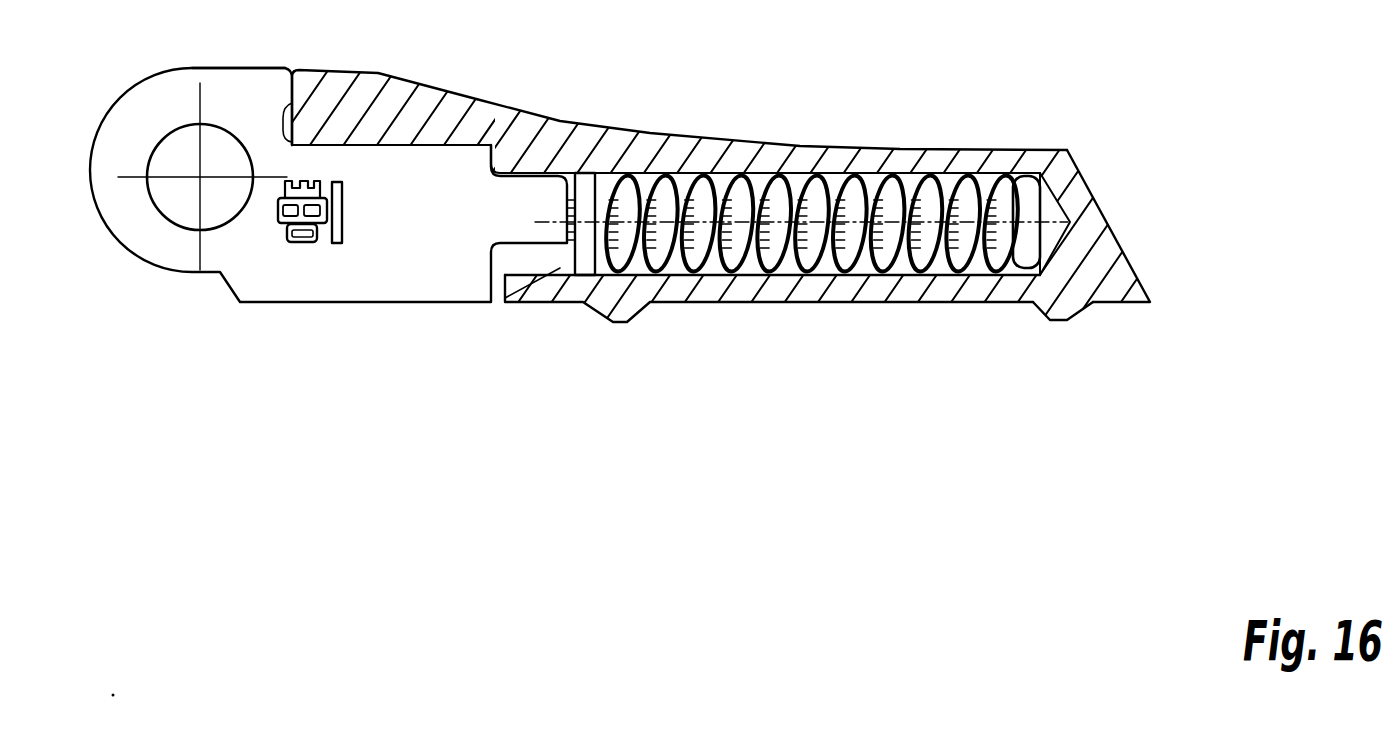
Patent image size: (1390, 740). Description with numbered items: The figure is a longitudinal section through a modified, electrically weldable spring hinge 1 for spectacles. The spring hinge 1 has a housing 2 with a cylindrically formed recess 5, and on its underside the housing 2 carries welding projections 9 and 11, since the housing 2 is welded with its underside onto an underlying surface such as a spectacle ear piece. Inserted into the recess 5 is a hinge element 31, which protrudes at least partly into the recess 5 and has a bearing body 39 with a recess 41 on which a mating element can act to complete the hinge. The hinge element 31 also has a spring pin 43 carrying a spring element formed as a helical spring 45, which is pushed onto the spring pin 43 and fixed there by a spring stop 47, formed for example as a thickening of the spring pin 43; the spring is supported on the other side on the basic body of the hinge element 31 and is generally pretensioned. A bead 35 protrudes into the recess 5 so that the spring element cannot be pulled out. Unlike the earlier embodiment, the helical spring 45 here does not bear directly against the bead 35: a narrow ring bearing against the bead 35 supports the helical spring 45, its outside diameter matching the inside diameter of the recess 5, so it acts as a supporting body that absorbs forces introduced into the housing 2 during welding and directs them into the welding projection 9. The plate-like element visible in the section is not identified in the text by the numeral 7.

The spring hinge 1 is at (820, 96).
The housing 2 is at (541, 123).
The recess 5 is at (1040, 168).
The pressure plate 7 is at (593, 200).
The welding projection 9 is at (562, 268).
The welding projection 11 is at (1047, 308).
The hinge element 31 is at (236, 304).
The bead 35 is at (556, 270).
The bearing body 39 is at (232, 72).
The recess 41 is at (187, 207).
The spring pin 43 is at (688, 172).
The helical spring 45 is at (720, 266).
The spring stop 47 is at (1021, 208).